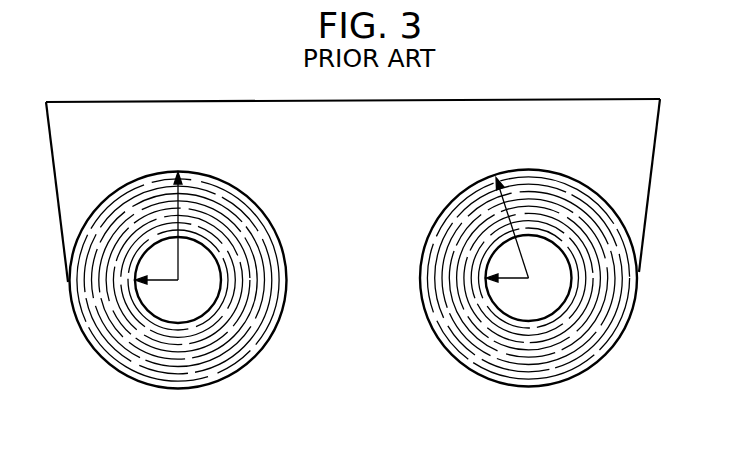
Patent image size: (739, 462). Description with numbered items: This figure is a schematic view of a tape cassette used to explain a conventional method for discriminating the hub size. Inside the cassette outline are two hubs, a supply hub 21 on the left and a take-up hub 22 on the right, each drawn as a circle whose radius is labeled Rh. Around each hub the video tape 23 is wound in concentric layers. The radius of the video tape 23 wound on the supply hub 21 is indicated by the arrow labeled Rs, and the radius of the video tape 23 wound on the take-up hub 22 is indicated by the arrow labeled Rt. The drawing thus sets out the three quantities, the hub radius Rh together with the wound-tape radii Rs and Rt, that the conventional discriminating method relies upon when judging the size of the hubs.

The supply hub 21 is at (180, 313).
The take-up hub 22 is at (531, 310).
The video tape 23 is at (362, 100).